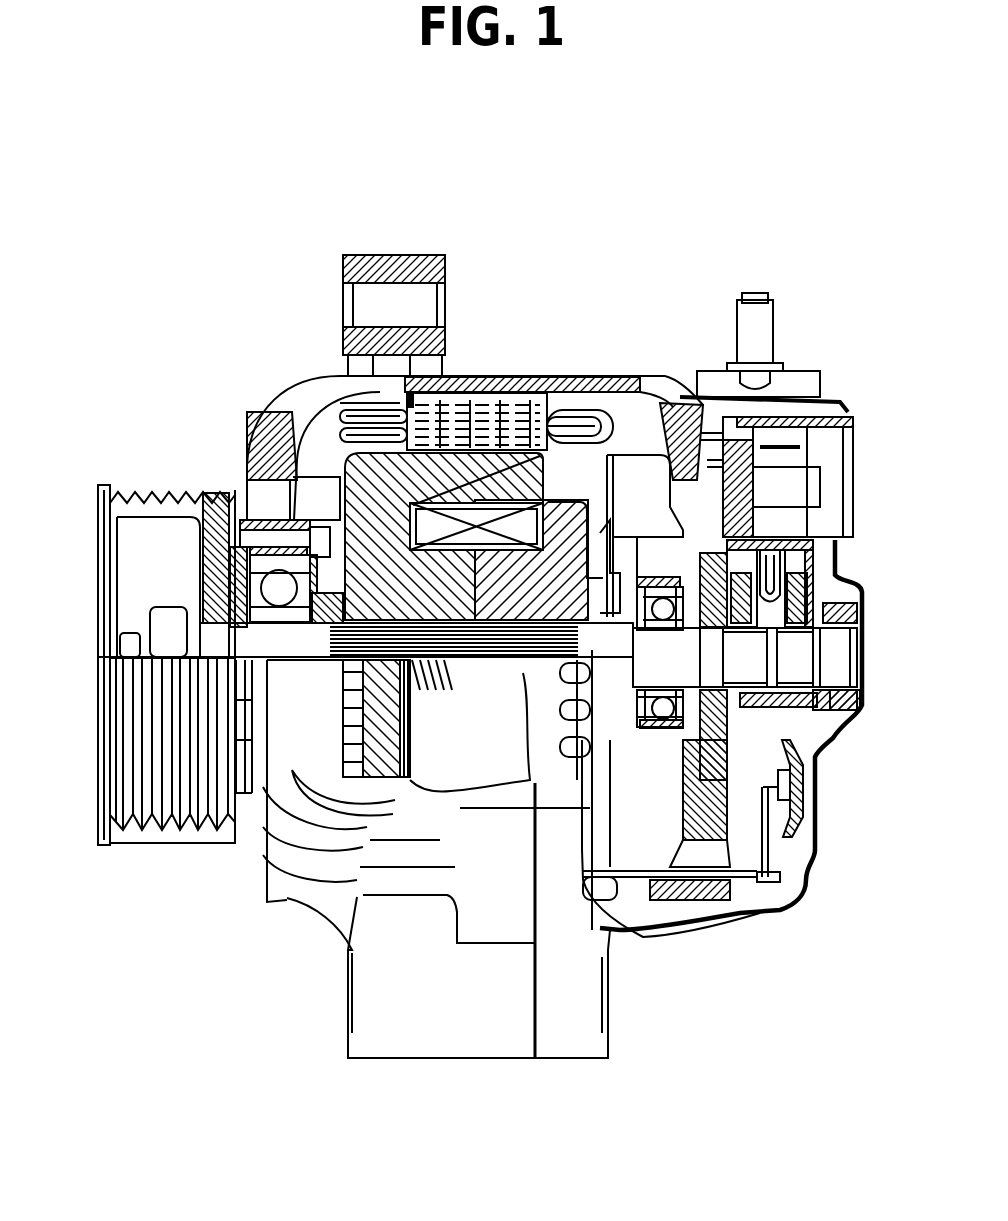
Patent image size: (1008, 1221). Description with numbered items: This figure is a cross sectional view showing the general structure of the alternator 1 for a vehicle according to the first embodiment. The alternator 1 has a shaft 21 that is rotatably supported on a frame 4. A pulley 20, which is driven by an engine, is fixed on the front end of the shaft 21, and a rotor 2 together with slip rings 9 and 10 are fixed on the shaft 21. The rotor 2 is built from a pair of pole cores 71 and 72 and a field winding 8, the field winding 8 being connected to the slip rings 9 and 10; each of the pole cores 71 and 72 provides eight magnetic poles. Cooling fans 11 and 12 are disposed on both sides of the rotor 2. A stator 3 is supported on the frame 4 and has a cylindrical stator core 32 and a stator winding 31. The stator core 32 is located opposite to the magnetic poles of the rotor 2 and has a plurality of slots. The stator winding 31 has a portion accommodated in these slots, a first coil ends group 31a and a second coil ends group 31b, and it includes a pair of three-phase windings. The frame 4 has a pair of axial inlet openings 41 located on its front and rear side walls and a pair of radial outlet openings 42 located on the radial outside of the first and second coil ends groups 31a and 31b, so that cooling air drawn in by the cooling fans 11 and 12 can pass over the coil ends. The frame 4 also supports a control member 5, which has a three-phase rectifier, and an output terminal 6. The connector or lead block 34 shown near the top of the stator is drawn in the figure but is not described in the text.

The alternator 1 is at (730, 247).
The rotor 2 is at (278, 440).
The stator 3 is at (622, 403).
The frame 4 is at (490, 376).
The control member 5 is at (777, 792).
The output terminal 6 is at (757, 338).
The field winding 8 is at (481, 517).
The slip ring 9 is at (747, 672).
The slip ring 10 is at (807, 647).
The cooling fan 11 is at (282, 478).
The cooling fan 12 is at (640, 525).
The pulley 20 is at (127, 520).
The shaft 21 is at (232, 635).
The stator winding 31 is at (596, 390).
The first coil ends group 31a is at (587, 405).
The second coil ends group 31b is at (360, 410).
The stator core 32 is at (455, 407).
The connector / lead block 34 is at (352, 395).
The axial inlet opening 41 is at (255, 472).
The radial outlet opening 42 is at (318, 398).
The pole core 71 is at (733, 535).
The pole core 72 is at (268, 502).